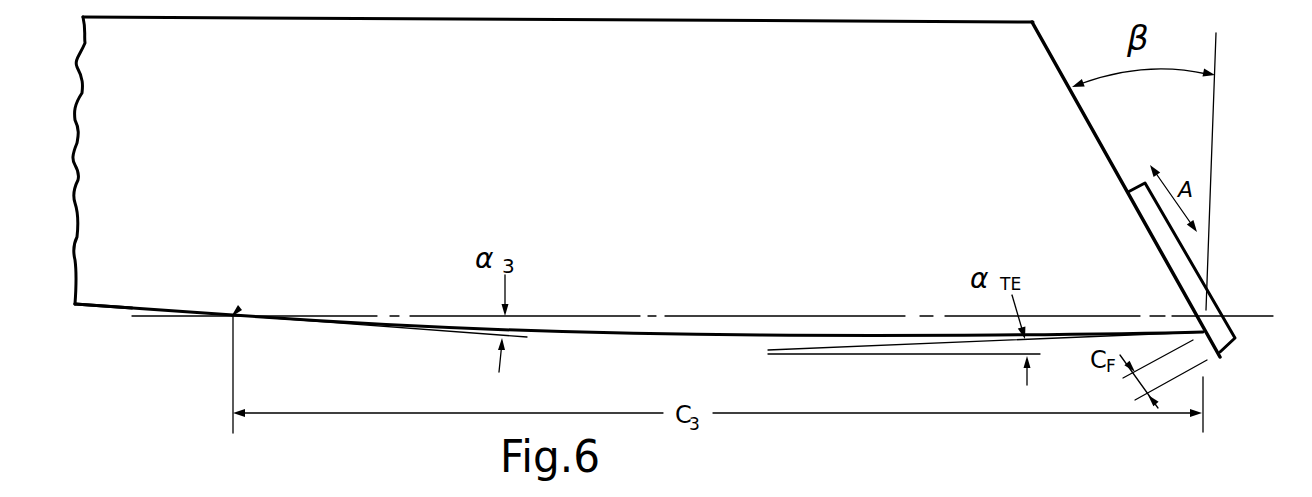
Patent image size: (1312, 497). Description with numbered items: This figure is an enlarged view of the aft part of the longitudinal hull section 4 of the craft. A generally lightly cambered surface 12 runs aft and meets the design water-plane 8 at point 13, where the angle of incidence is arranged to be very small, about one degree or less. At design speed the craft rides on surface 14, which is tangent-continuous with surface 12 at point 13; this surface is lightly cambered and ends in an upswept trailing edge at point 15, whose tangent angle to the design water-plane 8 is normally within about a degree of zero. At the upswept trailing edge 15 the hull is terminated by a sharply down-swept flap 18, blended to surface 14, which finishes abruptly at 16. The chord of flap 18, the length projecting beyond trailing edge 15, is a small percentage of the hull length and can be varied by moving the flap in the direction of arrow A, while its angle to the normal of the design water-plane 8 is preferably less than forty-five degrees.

The longitudinal hull section 4 is at (1022, 56).
The design water-plane 8 is at (1245, 318).
The lightly cambered surface 12 is at (115, 307).
The point 13 is at (233, 314).
The surface 14 is at (699, 333).
The upswept trailing edge 15 is at (1192, 318).
The flap termination 16 is at (1220, 353).
The flap 18 is at (1233, 338).